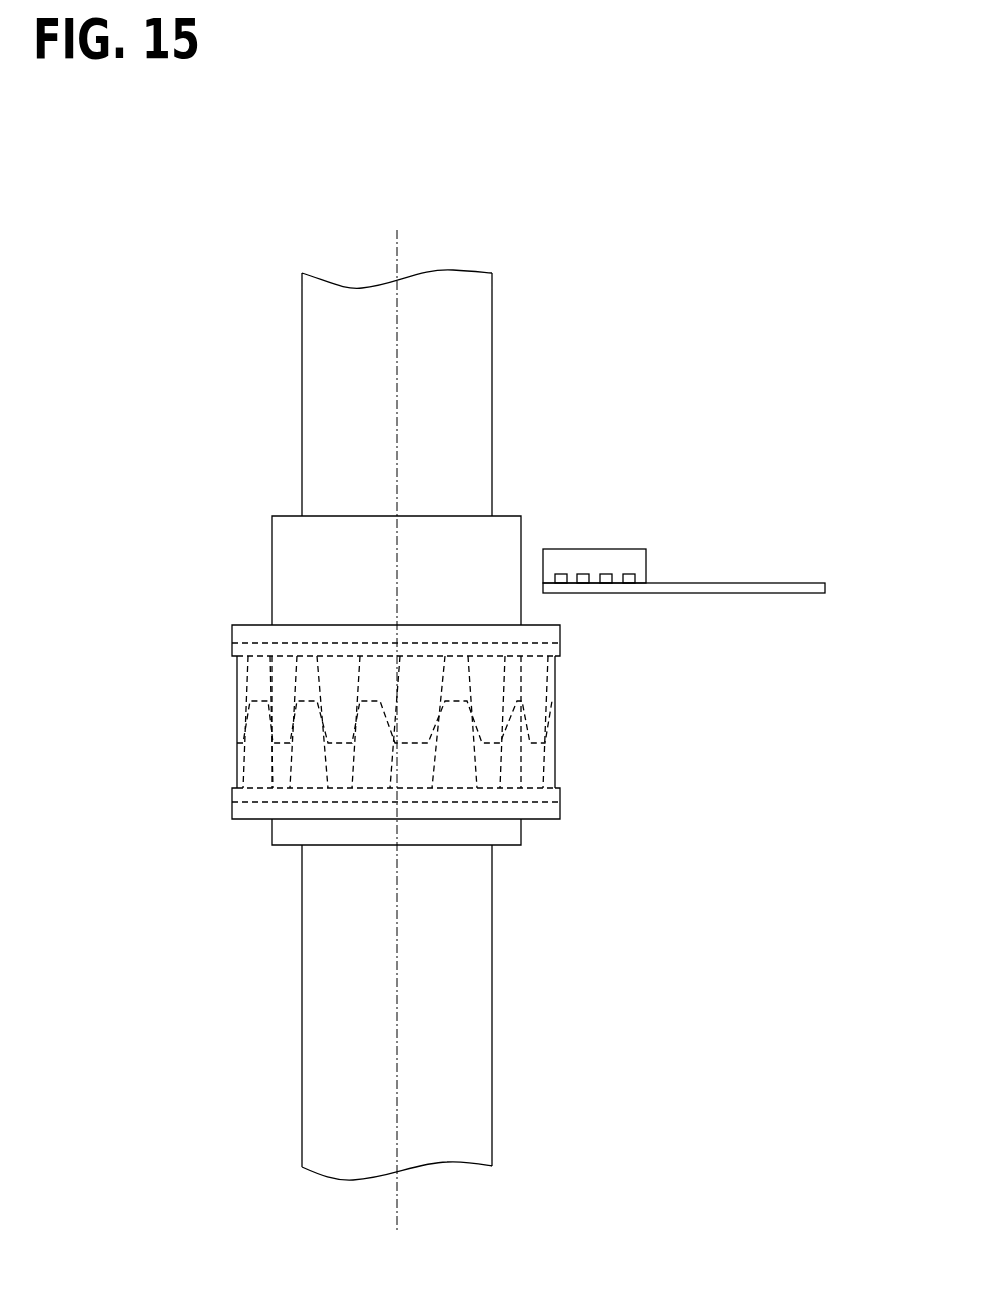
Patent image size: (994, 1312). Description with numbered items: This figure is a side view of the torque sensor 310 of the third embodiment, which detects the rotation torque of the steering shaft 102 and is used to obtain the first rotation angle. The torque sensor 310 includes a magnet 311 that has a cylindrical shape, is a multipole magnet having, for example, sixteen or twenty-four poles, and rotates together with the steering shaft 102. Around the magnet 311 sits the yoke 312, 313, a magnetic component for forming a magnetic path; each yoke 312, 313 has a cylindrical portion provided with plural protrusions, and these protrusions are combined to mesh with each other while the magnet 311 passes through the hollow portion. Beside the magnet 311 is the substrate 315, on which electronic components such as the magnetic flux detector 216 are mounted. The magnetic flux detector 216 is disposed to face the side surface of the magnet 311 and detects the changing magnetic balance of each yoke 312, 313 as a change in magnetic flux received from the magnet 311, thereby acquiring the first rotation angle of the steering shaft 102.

The steering shaft 102 is at (302, 352).
The torque sensor 310 is at (405, 639).
The magnet 311 is at (522, 530).
The yoke 312 is at (553, 690).
The yoke 313 is at (549, 762).
The magnetic flux detector 216 is at (618, 549).
The substrate 315 is at (793, 583).